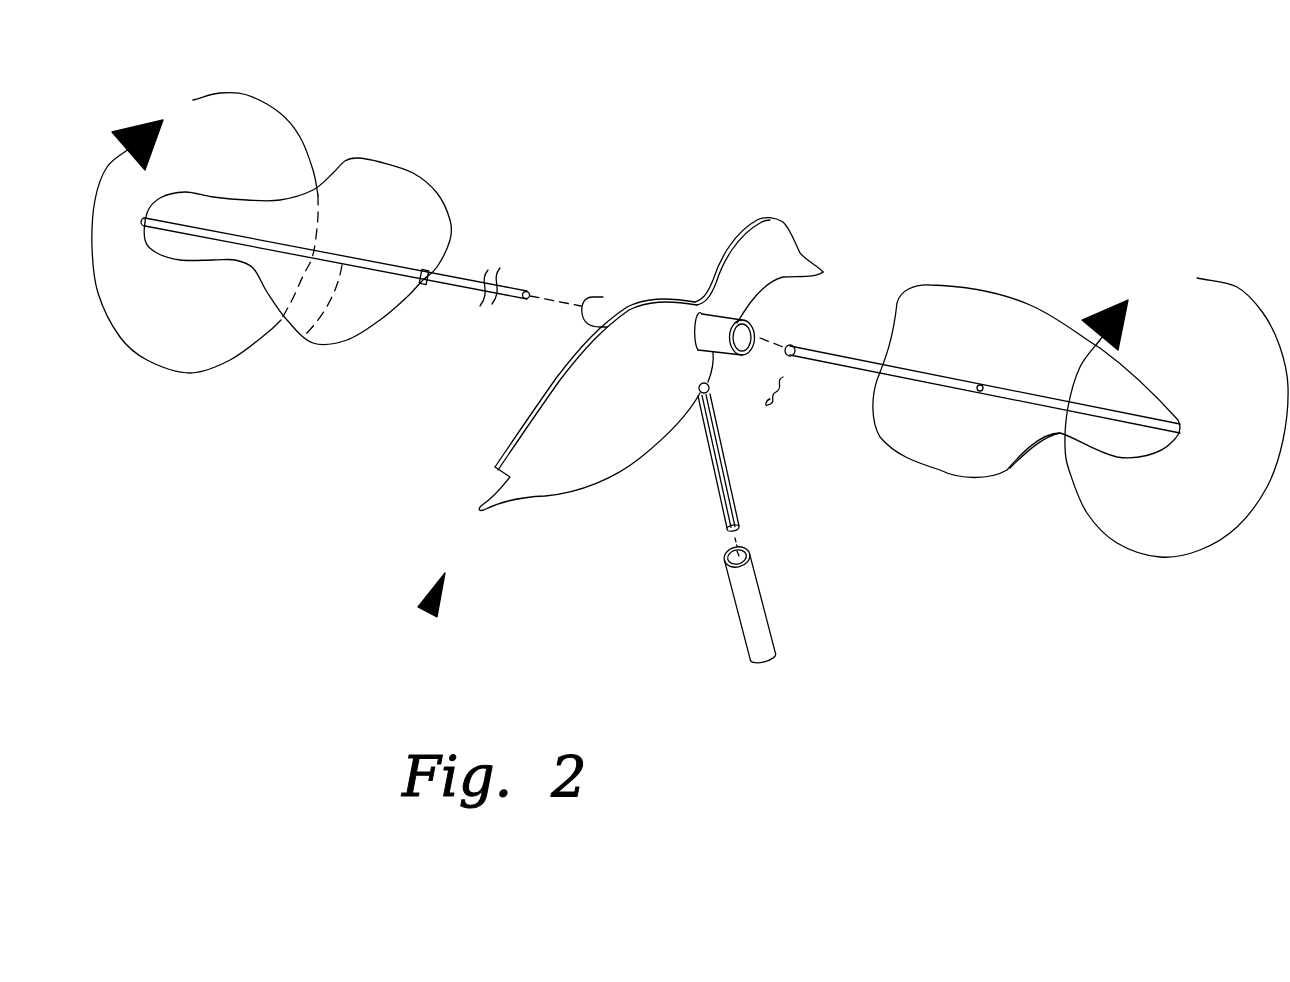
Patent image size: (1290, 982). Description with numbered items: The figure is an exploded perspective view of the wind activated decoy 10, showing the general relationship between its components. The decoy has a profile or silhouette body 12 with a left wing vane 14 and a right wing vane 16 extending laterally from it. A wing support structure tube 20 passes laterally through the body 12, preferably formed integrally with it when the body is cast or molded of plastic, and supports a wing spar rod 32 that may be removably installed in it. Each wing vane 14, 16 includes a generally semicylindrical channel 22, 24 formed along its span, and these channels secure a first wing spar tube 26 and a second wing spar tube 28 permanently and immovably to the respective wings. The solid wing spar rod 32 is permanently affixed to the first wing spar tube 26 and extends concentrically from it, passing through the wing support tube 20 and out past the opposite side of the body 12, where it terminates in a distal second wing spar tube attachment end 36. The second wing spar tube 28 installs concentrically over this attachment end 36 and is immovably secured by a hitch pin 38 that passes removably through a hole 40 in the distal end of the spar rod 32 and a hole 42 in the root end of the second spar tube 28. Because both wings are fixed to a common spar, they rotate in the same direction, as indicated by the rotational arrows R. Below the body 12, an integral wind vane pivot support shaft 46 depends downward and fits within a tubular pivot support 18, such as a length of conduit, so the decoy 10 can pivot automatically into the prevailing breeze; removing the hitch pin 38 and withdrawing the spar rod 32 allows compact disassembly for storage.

The wind activated decoy 10 is at (428, 612).
The silhouette body 12 is at (571, 478).
The first wing vane 14 is at (397, 165).
The second wing vane 16 is at (1023, 305).
The pivot support tube 18 is at (735, 618).
The wing support structure tube 20 is at (600, 297).
The first wing channel 22 is at (300, 340).
The second wing channel 24 is at (1037, 435).
The first wing spar tube 26 is at (421, 284).
The second wing spar tube 28 is at (933, 384).
The wing spar rod 32 is at (462, 278).
The second wing spar tube attachment end 36 is at (521, 292).
The hitch pin 38 is at (768, 406).
The hole in wing spar rod 40 is at (524, 296).
The hole in second wing spar tube 42 is at (793, 347).
The wind vane pivot support shaft 46 is at (713, 466).
The rotational arrow R is at (250, 93).